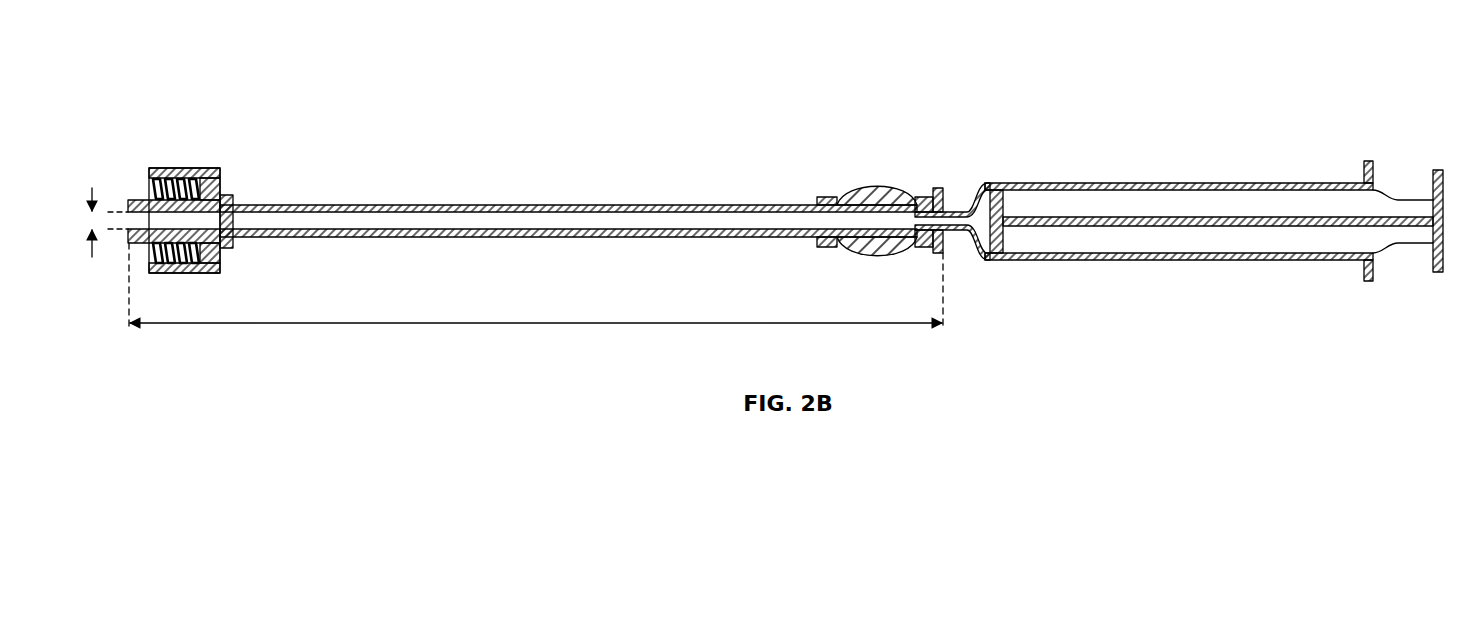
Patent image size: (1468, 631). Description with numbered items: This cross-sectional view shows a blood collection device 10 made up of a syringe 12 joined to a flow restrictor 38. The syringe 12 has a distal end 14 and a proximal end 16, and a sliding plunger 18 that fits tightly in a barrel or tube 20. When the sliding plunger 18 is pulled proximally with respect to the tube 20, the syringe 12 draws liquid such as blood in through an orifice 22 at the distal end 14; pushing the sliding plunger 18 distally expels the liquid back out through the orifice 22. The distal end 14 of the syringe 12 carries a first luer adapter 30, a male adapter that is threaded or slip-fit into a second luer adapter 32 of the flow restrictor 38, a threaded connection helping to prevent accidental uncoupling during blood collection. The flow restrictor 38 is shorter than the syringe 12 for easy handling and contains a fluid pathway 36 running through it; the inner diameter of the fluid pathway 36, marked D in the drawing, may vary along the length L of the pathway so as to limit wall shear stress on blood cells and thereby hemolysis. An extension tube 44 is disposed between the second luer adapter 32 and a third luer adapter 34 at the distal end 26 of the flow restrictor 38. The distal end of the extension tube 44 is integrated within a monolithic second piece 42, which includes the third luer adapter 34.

The blood collection device 10 is at (766, 156).
The syringe 12 is at (1218, 165).
The distal end 14 is at (968, 175).
The proximal end 16 is at (1443, 190).
The sliding plunger 18 is at (1388, 192).
The barrel or tube 20 is at (1204, 183).
The orifice 22 is at (918, 197).
The distal end 26 is at (157, 205).
The first luer adapter 30 is at (930, 245).
The second luer adapter 32 is at (940, 188).
The third luer adapter 34 is at (148, 265).
The fluid pathway 36 is at (568, 219).
The flow restrictor 38 is at (640, 203).
The second piece 42 is at (200, 170).
The extension tube 44 is at (623, 238).
The diameter D is at (93, 190).
The length L is at (522, 323).